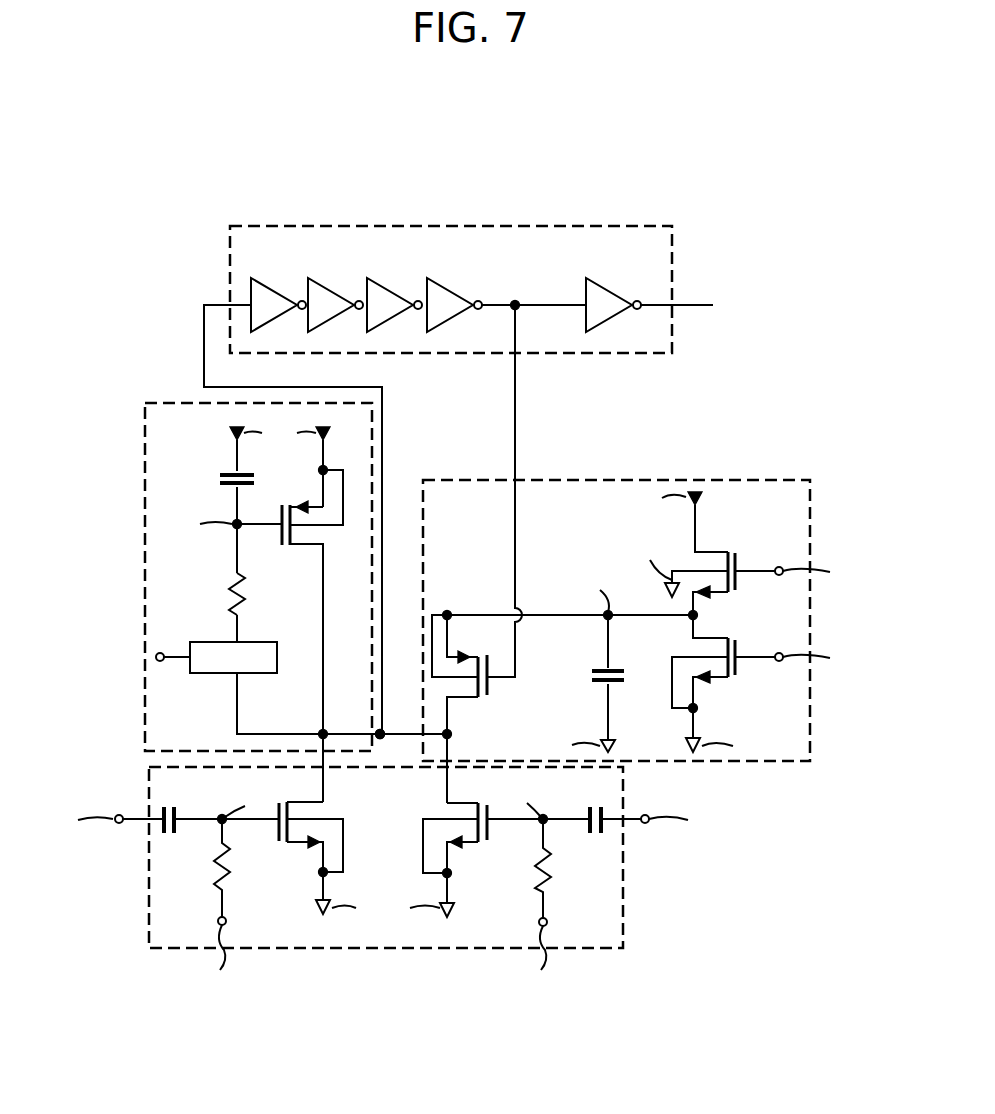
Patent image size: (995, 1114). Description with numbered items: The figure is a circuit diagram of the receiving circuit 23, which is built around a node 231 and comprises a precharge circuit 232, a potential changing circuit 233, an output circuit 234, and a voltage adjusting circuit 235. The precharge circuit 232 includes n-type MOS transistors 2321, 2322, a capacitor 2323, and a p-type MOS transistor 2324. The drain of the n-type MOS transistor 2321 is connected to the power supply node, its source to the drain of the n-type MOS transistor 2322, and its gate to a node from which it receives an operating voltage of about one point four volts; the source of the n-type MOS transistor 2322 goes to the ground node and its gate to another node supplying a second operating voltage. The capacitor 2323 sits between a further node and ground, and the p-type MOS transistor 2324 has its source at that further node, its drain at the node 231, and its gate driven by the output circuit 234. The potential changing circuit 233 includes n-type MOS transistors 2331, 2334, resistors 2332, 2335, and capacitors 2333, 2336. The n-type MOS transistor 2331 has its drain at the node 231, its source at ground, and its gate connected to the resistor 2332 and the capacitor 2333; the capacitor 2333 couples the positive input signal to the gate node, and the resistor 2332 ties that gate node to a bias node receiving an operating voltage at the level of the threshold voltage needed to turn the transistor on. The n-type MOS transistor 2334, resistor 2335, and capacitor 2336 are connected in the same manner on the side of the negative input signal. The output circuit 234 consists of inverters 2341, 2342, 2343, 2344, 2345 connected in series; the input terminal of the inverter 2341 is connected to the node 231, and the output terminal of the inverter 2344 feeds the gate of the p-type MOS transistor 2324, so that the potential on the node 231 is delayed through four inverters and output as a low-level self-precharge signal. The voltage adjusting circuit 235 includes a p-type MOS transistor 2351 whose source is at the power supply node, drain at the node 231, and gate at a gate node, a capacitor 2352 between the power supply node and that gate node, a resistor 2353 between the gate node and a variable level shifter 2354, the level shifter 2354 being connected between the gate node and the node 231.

The receiving circuit 23 is at (477, 141).
The node 231 is at (382, 732).
The precharge circuit 232 is at (620, 480).
The n-type MOS transistor 2321 is at (724, 551).
The n-type MOS transistor 2322 is at (724, 637).
The capacitor 2323 is at (600, 670).
The p-type MOS transistor 2324 is at (456, 700).
The potential changing circuit 233 is at (623, 876).
The n-type MOS transistor 2331 is at (298, 843).
The resistor 2332 is at (215, 878).
The capacitor 2333 is at (192, 792).
The n-type MOS transistor 2334 is at (470, 845).
The resistor 2335 is at (548, 872).
The capacitor 2336 is at (592, 806).
The output circuit 234 is at (485, 226).
The inverter 2341 is at (285, 272).
The inverter 2342 is at (345, 272).
The inverter 2343 is at (405, 272).
The inverter 2344 is at (446, 285).
The inverter 2345 is at (606, 285).
The voltage adjusting circuit 235 is at (180, 403).
The p-type MOS transistor 2351 is at (312, 547).
The capacitor 2352 is at (232, 474).
The resistor 2353 is at (236, 590).
The level shifter 2354 is at (212, 642).